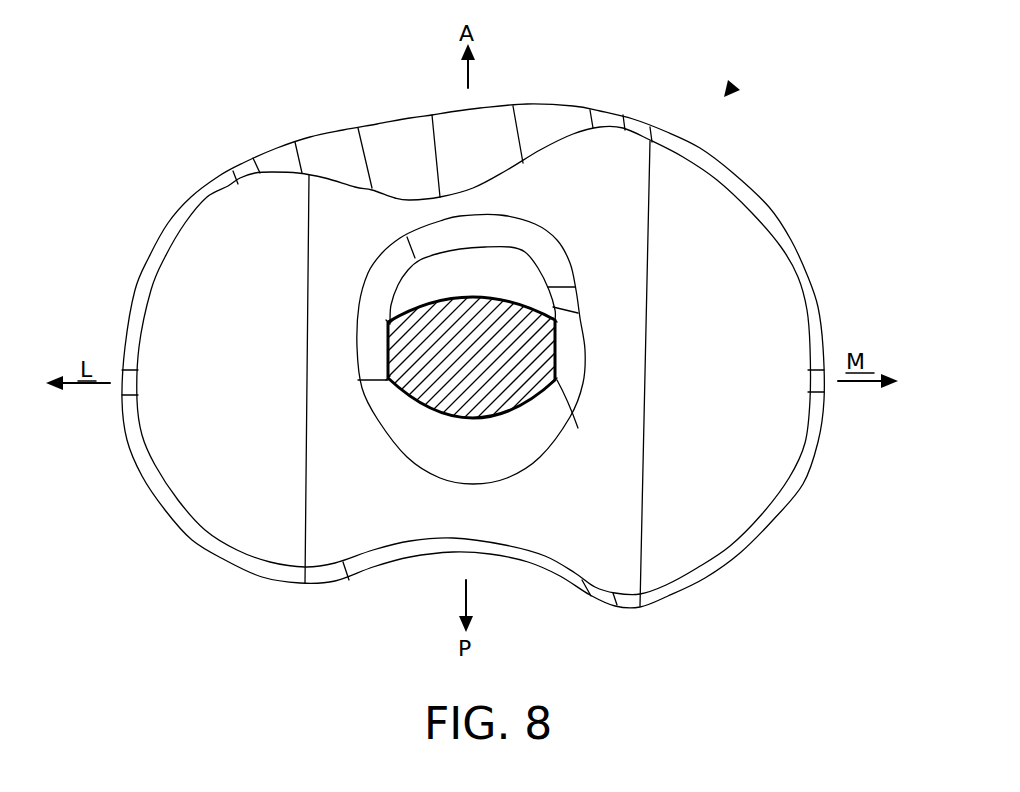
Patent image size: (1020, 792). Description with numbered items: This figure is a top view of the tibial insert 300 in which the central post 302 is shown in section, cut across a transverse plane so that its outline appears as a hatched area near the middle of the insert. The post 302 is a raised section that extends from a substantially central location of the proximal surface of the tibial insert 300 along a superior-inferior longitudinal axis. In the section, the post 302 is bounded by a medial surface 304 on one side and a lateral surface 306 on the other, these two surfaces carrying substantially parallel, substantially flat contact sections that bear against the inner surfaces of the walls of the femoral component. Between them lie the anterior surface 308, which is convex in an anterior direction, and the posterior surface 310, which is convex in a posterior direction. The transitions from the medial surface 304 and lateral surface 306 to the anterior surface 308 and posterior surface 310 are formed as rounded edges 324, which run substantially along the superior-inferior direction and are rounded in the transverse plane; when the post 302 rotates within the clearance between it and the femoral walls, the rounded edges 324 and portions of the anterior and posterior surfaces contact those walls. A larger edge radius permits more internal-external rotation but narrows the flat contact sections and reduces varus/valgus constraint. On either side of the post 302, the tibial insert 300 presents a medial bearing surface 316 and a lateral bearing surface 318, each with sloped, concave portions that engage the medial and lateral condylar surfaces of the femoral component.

The tibial insert 300 is at (728, 88).
The post 302 is at (498, 350).
The medial surface 304 is at (557, 366).
The lateral surface 306 is at (388, 362).
The anterior surface 308 is at (497, 257).
The posterior surface 310 is at (470, 418).
The medial bearing surface 316 is at (740, 297).
The lateral bearing surface 318 is at (195, 288).
The rounded edges 324 is at (388, 320).